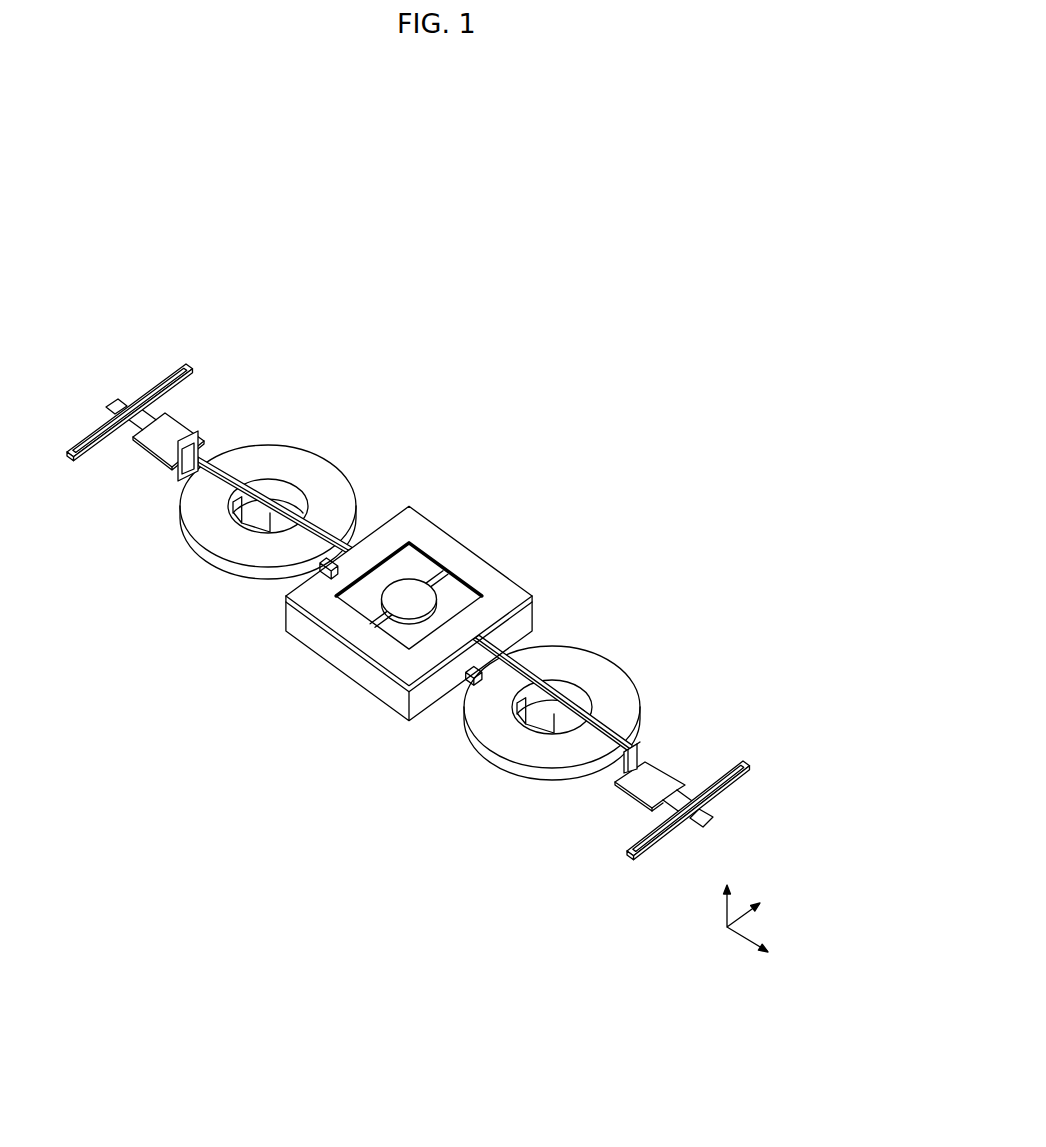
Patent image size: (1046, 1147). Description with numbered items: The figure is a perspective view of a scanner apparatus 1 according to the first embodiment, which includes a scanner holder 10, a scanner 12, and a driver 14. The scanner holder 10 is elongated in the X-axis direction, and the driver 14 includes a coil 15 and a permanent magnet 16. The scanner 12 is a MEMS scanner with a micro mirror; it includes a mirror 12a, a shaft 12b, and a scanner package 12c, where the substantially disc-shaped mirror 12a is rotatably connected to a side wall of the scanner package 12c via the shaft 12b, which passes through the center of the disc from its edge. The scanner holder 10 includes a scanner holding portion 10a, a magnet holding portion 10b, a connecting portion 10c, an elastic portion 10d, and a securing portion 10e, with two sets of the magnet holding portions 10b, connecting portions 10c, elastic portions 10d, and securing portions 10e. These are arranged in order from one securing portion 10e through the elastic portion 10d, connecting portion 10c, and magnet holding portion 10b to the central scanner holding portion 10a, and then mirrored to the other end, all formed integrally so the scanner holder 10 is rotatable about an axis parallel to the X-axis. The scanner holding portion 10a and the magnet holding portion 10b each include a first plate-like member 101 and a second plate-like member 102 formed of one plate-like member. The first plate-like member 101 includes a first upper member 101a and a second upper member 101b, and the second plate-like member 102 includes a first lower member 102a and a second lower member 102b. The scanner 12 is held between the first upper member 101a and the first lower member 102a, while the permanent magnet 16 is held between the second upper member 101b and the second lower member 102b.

The scanner apparatus 1 is at (677, 512).
The scanner holder 10 is at (843, 715).
The scanner holding portion 10a is at (524, 523).
The magnet holding portion 10b is at (386, 436).
The connecting portion 10c is at (176, 423).
The elastic portion 10d is at (190, 365).
The securing portion 10e is at (119, 402).
The first plate-like member 101 is at (641, 741).
The first upper member 101a is at (437, 552).
The second upper member 101b is at (278, 456).
The second plate-like member 102 is at (605, 780).
The first lower member 102a is at (526, 633).
The second lower member 102b is at (214, 468).
The scanner 12 is at (223, 662).
The mirror 12a is at (353, 627).
The shaft 12b is at (370, 672).
The scanner package 12c is at (380, 690).
The driver 14 is at (170, 617).
The coil 15 is at (207, 527).
The permanent magnet 16 is at (253, 519).